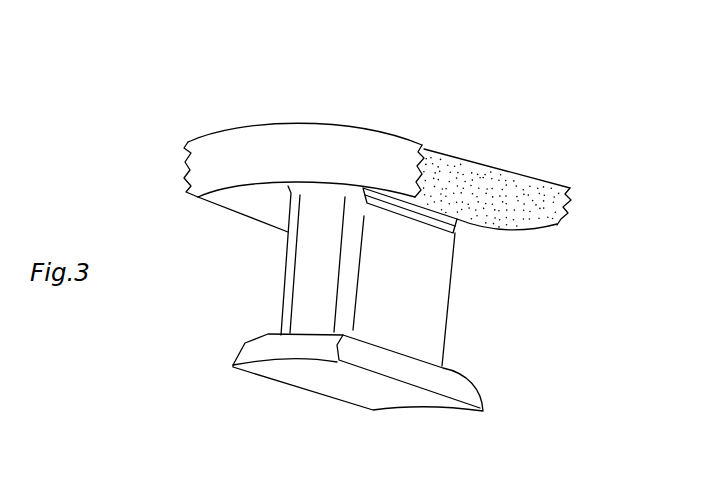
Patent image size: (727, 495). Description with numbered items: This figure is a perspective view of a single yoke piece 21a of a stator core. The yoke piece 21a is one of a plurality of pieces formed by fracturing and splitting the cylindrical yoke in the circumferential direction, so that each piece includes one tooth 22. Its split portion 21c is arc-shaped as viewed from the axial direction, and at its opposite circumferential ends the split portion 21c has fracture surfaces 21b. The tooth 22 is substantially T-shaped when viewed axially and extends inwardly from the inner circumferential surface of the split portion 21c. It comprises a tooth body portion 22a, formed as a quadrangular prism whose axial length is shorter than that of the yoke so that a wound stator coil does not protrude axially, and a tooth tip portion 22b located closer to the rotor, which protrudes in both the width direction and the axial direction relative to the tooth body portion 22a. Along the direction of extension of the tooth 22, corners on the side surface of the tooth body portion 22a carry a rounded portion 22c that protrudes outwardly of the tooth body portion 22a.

The yoke piece 21a is at (524, 124).
The fracture surface 21b is at (542, 210).
The split portion 21c is at (301, 128).
The tooth 22 is at (214, 358).
The tooth body portion 22a is at (308, 283).
The tooth tip portion 22b is at (343, 388).
The rounded portion 22c is at (352, 282).